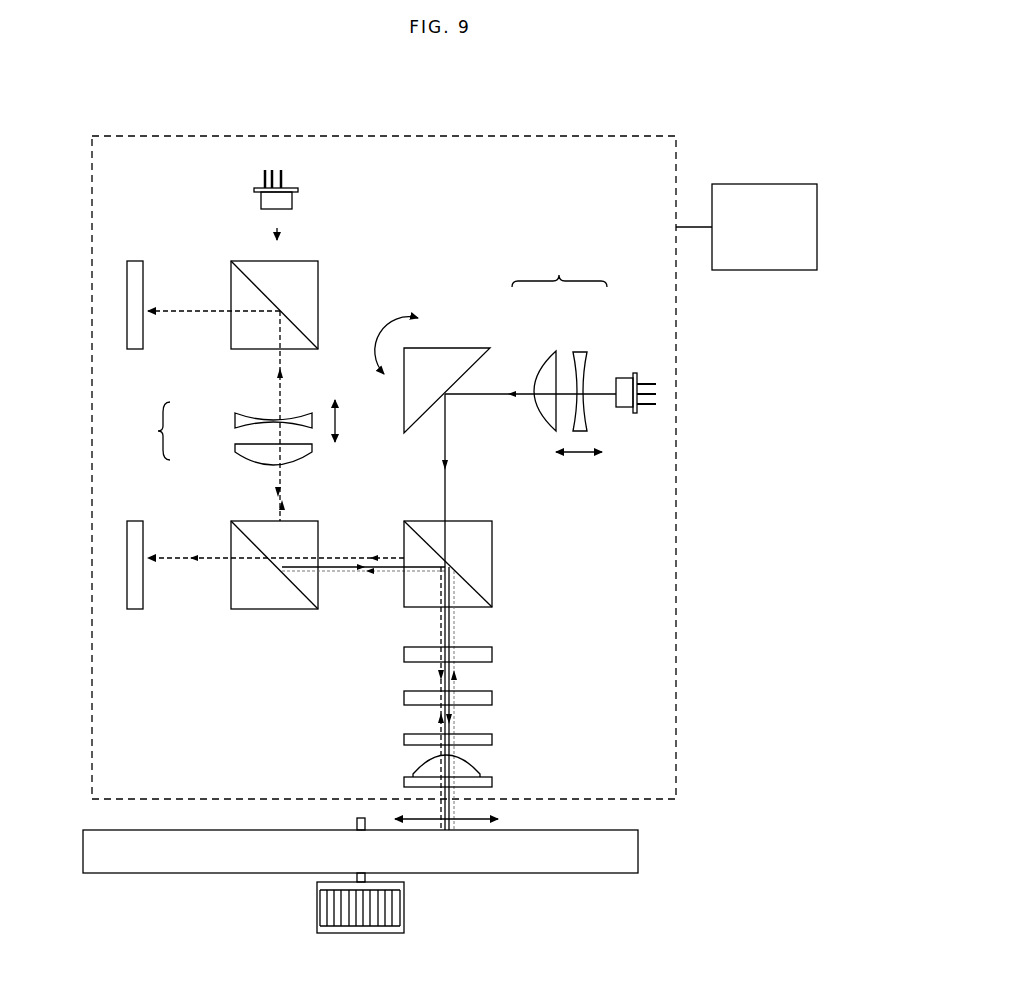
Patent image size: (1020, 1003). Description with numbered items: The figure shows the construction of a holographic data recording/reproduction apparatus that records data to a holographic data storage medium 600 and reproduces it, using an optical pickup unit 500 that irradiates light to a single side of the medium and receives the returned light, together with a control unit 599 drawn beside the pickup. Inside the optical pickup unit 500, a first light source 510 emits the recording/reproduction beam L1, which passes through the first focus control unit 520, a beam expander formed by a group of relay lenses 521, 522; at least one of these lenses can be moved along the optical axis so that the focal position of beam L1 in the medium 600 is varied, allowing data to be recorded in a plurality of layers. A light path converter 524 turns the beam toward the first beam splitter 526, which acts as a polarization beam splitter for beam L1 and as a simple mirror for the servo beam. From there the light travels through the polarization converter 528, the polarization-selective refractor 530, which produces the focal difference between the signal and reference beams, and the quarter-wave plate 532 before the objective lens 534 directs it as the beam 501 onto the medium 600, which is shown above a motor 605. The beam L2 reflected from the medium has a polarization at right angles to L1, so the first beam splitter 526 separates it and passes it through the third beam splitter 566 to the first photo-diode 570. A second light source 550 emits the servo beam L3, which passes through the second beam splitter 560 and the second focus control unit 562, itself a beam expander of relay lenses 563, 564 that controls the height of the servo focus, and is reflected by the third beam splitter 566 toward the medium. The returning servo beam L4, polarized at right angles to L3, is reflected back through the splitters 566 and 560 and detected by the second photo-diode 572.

The optical pickup unit 500 is at (619, 134).
The control unit 599 is at (766, 184).
The second light source 550 is at (292, 201).
The second photo-diode 572 is at (139, 261).
The second beam splitter 560 is at (318, 281).
The servo beam reflected by the medium L4 is at (285, 493).
The servo beam L3 is at (276, 507).
The second focus control unit 562 is at (228, 432).
The relay lens 563 is at (235, 420).
The relay lens 564 is at (235, 449).
The first photo-diode 570 is at (136, 609).
The third beam splitter 566 is at (262, 609).
The light path converter 524 is at (444, 348).
The first focus control unit 520 is at (559, 340).
The relay lens 521 is at (551, 351).
The relay lens 522 is at (585, 352).
The first light source 510 is at (636, 373).
The recording/reproduction beam L1 is at (602, 396).
The first beam splitter 526 is at (492, 553).
The reproduction beam L2 is at (440, 626).
The polarization converter 528 is at (492, 655).
The polarization-selective refractor 530 is at (492, 698).
The quarter-wave plate 532 is at (492, 740).
The objective lens 534 is at (492, 781).
The laser beam 501 is at (480, 815).
The holographic data storage medium 600 is at (638, 857).
The motor 605 is at (370, 933).